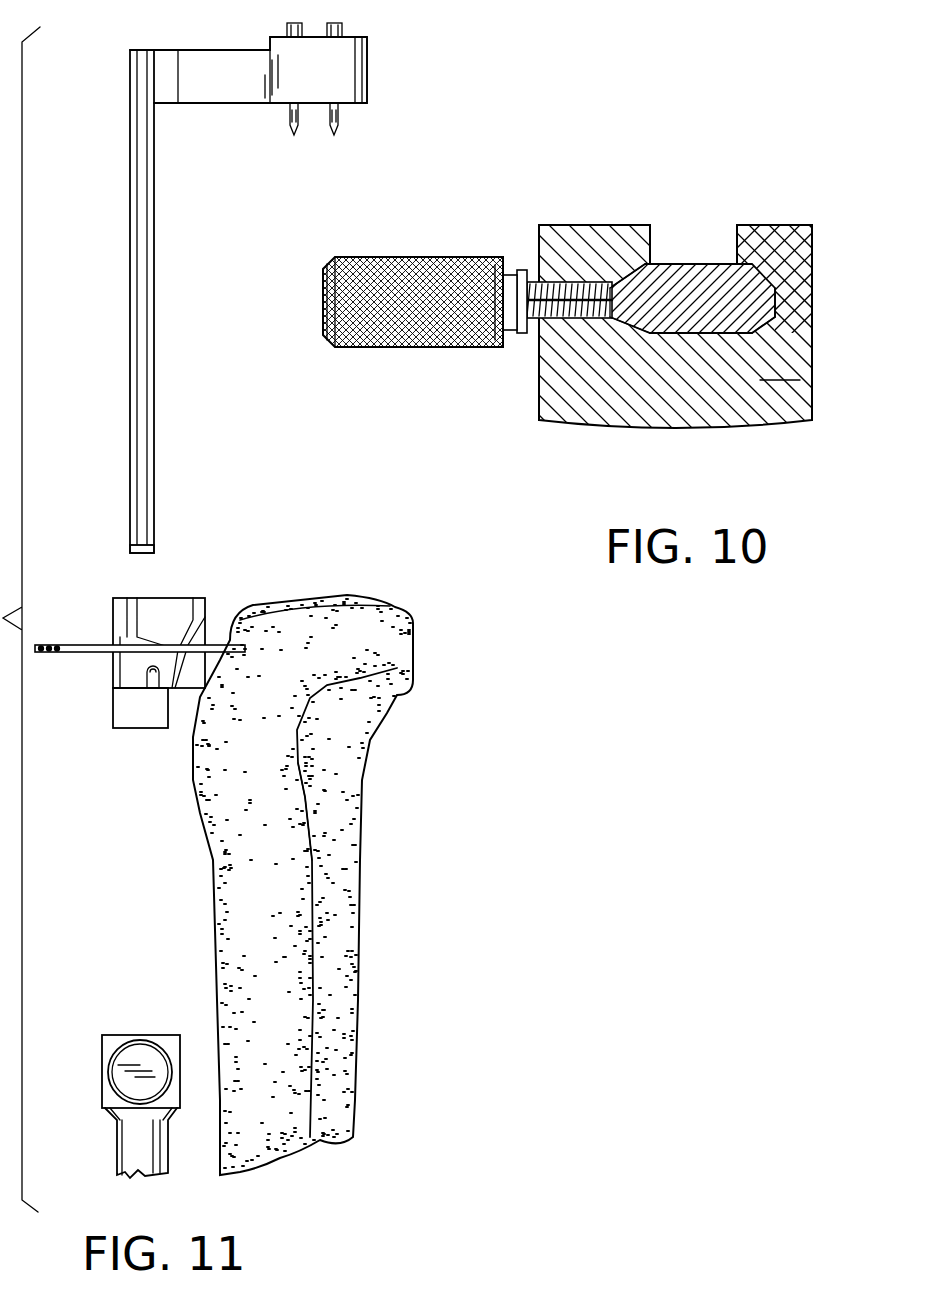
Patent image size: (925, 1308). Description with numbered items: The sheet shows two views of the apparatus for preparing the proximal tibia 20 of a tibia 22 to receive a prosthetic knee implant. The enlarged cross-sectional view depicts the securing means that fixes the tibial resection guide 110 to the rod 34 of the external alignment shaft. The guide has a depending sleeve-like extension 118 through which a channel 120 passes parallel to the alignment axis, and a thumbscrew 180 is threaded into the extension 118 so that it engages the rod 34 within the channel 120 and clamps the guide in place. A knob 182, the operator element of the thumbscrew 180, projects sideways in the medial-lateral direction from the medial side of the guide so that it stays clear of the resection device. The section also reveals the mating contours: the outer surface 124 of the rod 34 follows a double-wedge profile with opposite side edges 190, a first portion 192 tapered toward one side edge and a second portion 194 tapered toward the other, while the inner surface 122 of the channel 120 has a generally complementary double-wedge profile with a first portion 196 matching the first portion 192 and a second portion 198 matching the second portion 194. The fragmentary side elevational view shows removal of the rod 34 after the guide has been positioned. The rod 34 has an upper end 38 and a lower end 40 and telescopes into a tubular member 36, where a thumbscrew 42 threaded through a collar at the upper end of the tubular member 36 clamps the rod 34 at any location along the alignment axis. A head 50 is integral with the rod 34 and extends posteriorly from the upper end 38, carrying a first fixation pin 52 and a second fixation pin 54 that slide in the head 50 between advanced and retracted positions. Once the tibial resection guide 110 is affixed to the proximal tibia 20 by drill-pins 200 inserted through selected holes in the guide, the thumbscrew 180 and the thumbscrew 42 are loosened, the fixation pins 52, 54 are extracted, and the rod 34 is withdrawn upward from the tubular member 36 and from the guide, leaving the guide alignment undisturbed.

In FIG. 11, the proximal tibia 20 is at (405, 660).
In FIG. 11, the tibia 22 is at (278, 830).
In FIG. 10, the rod 34 is at (775, 272).
In FIG. 11, the rod 34 is at (140, 393).
In FIG. 11, the tubular member 36 is at (130, 1155).
In FIG. 11, the upper end 38 is at (143, 50).
In FIG. 11, the lower end 40 is at (130, 555).
In FIG. 11, the thumbscrew 42 is at (118, 1075).
In FIG. 11, the head 50 is at (350, 67).
In FIG. 11, the first fixation pin 52 is at (338, 117).
In FIG. 11, the second fixation pin 54 is at (288, 117).
In FIG. 10, the tibial resection guide 110 is at (812, 420).
In FIG. 11, the tibial resection guide 110 is at (180, 600).
In FIG. 10, the extension 118 is at (778, 405).
In FIG. 11, the extension 118 is at (137, 713).
In FIG. 10, the channel 120 is at (668, 337).
In FIG. 10, the inner surface 122 is at (703, 333).
In FIG. 10, the outer surface 124 is at (687, 264).
In FIG. 10, the thumbscrew 180 is at (536, 288).
In FIG. 10, the knob 182 is at (395, 330).
In FIG. 10, the opposite side edges 190 is at (775, 295).
In FIG. 10, the first portion 192 is at (768, 323).
In FIG. 10, the second portion 194 is at (635, 335).
In FIG. 10, the first portion 196 is at (812, 230).
In FIG. 10, the second portion 198 is at (628, 277).
In FIG. 11, the drill-pins 200 is at (75, 655).